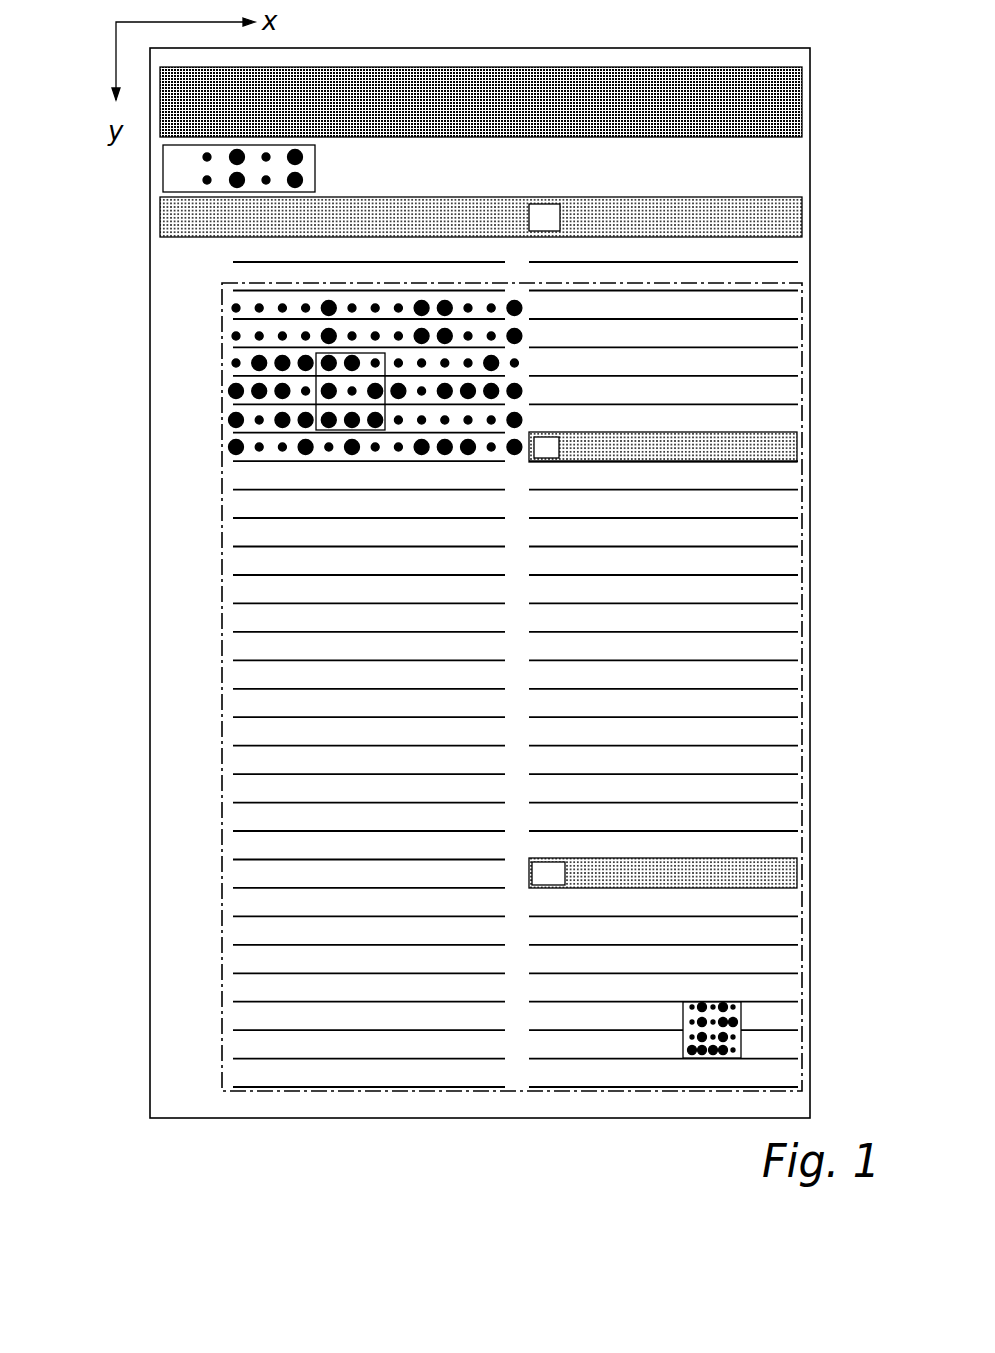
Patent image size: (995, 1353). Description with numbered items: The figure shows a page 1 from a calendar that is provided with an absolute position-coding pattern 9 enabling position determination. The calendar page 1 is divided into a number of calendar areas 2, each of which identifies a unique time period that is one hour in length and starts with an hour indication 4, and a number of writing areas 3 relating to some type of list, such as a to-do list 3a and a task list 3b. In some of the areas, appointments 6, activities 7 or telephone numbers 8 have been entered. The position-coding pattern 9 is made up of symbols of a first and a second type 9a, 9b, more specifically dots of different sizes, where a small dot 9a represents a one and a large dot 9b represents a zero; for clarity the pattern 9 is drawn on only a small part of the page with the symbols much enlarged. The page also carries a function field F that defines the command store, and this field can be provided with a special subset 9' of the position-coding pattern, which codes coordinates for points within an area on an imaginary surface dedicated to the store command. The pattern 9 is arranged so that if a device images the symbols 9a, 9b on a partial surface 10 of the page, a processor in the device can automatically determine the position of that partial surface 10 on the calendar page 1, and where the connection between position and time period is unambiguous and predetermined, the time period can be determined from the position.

The page 1 is at (503, 30).
The calendar area 2 is at (238, 530).
The writing area 3 is at (735, 246).
The to-do list 3a is at (800, 990).
The task list 3b is at (728, 583).
The hour indication 4 is at (158, 833).
The appointment 6 is at (277, 639).
The activity 7 is at (745, 500).
The telephone number 8 is at (163, 173).
The absolute position-coding pattern 9 is at (447, 687).
The symbol of a first type 9a is at (235, 306).
The symbol of a second type 9b is at (236, 391).
The special subset of the absolute position-coding pattern 9' is at (699, 1101).
The partial surface 10 is at (316, 430).
The function field F is at (735, 1035).